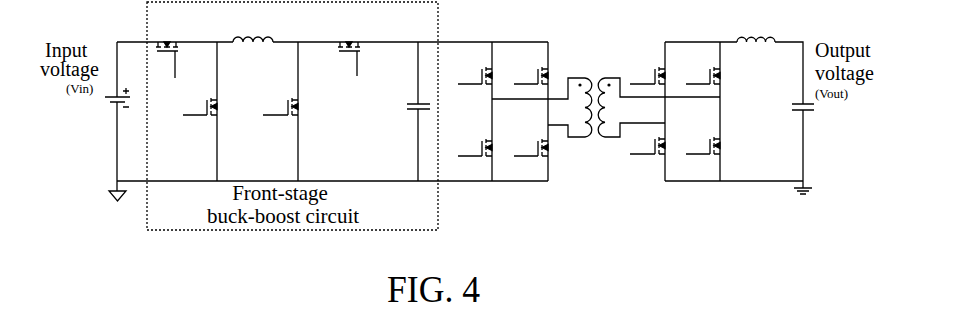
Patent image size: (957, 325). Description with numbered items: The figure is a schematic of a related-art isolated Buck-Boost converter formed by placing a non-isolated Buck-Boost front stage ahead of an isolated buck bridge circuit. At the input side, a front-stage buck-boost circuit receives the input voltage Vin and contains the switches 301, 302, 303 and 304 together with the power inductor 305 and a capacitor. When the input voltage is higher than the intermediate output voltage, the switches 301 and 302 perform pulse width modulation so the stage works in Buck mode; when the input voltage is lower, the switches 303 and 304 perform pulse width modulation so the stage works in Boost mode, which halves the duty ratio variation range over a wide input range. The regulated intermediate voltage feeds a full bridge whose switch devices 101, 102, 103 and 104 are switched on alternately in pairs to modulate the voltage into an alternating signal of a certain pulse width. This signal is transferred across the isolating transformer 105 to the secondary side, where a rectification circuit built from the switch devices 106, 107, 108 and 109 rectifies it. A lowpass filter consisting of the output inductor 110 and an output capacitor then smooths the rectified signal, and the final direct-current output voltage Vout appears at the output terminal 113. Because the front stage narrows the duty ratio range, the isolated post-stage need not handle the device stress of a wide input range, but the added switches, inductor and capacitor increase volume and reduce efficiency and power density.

The bridge circuit switch device 101 is at (472, 73).
The bridge circuit switch device 102 is at (472, 143).
The bridge circuit switch device 103 is at (527, 143).
The bridge circuit switch device 104 is at (527, 73).
The transformer 105 is at (578, 119).
The rectification circuit switch 106 is at (643, 73).
The rectification circuit switch 107 is at (645, 156).
The rectification circuit switch 108 is at (699, 156).
The rectification circuit switch 109 is at (698, 73).
The output inductor 110 is at (756, 52).
The output voltage terminal 113 is at (796, 65).
The switch 301 is at (171, 51).
The switch 302 is at (199, 121).
The switch 303 is at (280, 119).
The switch 304 is at (355, 50).
The power inductor 305 is at (253, 51).